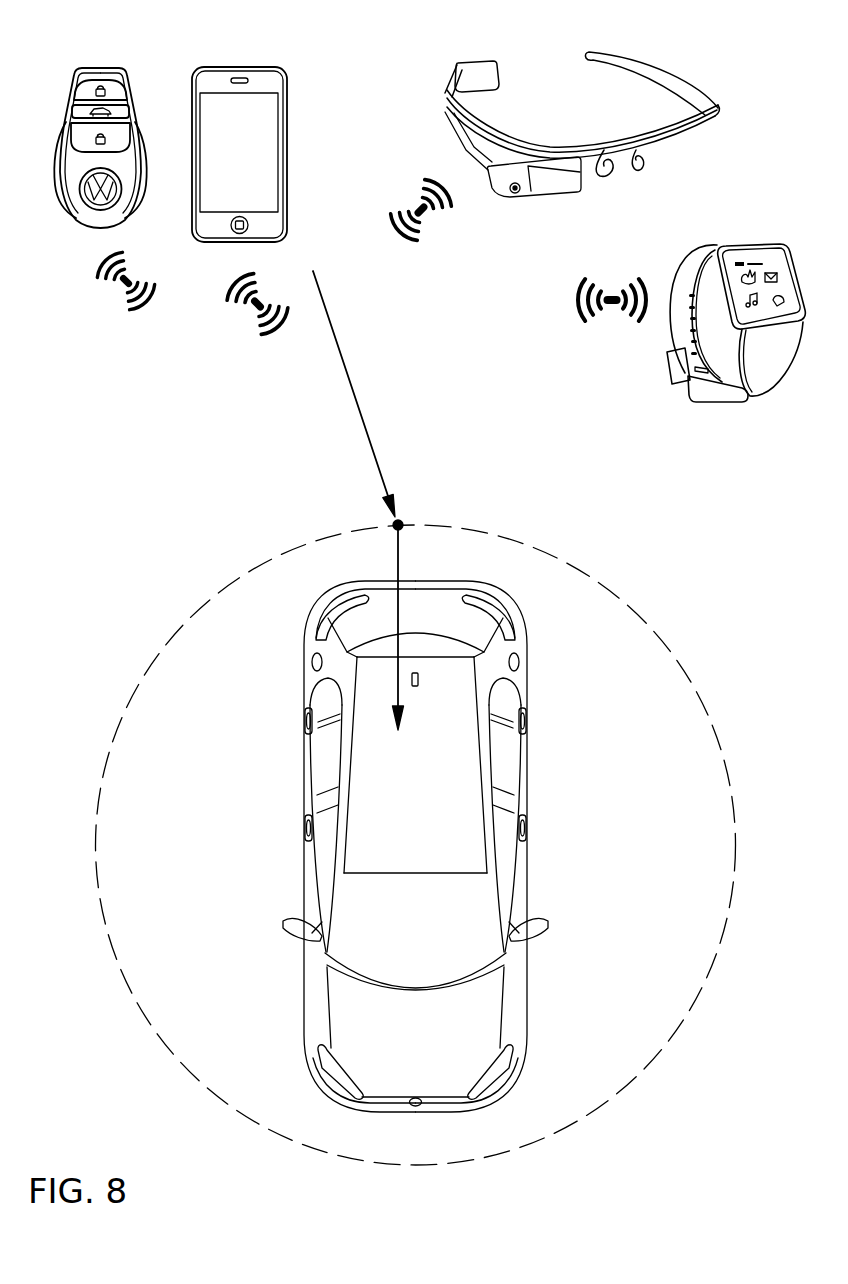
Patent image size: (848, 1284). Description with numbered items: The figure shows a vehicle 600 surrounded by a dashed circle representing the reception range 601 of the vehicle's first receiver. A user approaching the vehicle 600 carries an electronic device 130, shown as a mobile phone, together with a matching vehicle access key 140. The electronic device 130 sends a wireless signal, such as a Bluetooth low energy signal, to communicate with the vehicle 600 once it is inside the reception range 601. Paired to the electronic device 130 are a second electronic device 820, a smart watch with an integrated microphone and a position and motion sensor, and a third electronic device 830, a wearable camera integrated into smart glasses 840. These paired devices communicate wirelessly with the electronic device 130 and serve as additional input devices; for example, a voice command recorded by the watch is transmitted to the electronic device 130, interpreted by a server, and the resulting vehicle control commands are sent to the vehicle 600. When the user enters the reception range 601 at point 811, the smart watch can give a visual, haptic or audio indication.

The vehicle access key 140 is at (87, 68).
The electronic device 130 is at (243, 70).
The smart glasses 840 is at (703, 83).
The third electronic device 830 is at (520, 190).
The second electronic device 820 is at (770, 248).
The point 811 is at (398, 525).
The reception range 601 is at (167, 640).
The vehicle 600 is at (305, 788).